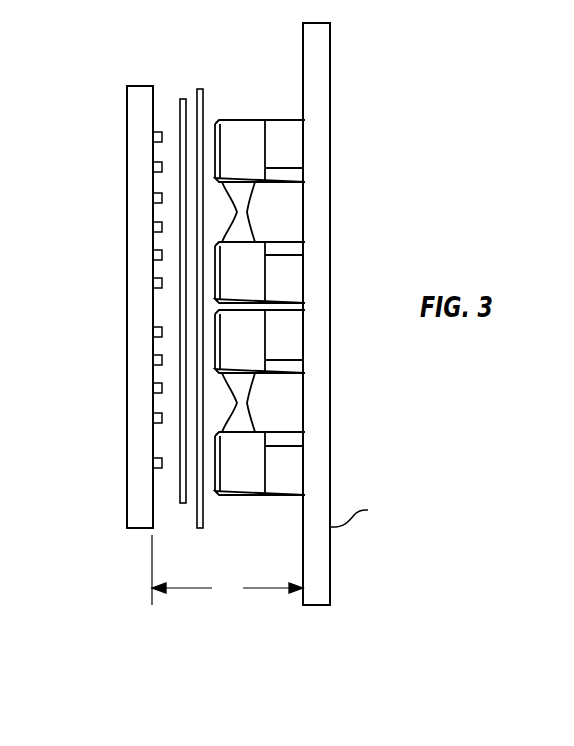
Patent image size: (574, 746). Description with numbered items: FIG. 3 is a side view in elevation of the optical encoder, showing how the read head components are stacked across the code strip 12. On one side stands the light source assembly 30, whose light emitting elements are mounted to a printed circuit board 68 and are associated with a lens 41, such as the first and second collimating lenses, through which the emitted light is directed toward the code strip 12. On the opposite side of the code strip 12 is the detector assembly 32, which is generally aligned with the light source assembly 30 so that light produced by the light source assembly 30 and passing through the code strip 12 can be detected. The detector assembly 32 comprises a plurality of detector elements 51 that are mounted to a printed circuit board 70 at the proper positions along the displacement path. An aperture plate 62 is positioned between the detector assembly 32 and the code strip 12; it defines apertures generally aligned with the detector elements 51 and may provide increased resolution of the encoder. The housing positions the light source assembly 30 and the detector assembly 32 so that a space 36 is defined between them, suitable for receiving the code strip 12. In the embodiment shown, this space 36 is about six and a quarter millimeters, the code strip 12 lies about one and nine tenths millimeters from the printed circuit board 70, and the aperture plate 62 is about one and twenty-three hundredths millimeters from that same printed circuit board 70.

The code strip 12 is at (199, 92).
The aperture plate 62 is at (183, 100).
The detector elements 51 is at (155, 137).
The detector assembly 32 is at (127, 273).
The printed circuit board 70 is at (127, 440).
The lens 41 is at (230, 129).
The light source assembly 30 is at (332, 252).
The printed circuit board 68 is at (363, 513).
The space 36 is at (227, 570).